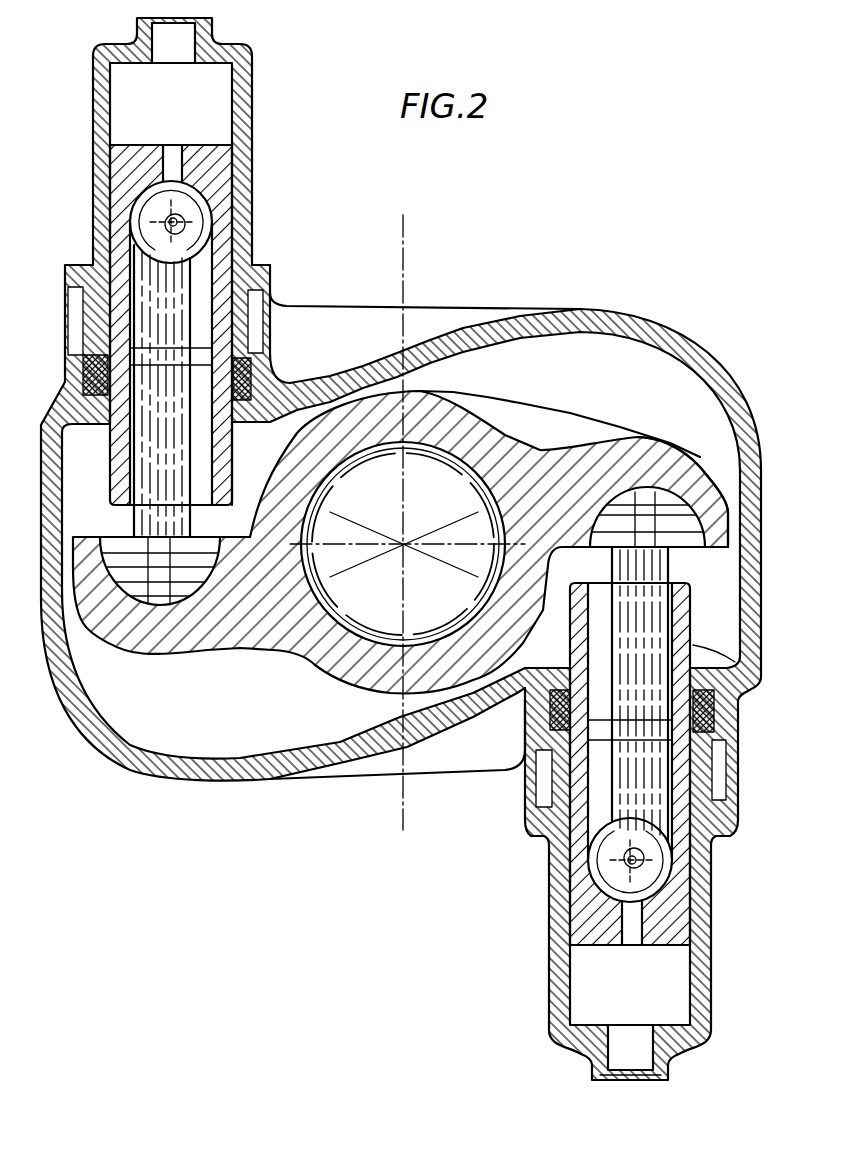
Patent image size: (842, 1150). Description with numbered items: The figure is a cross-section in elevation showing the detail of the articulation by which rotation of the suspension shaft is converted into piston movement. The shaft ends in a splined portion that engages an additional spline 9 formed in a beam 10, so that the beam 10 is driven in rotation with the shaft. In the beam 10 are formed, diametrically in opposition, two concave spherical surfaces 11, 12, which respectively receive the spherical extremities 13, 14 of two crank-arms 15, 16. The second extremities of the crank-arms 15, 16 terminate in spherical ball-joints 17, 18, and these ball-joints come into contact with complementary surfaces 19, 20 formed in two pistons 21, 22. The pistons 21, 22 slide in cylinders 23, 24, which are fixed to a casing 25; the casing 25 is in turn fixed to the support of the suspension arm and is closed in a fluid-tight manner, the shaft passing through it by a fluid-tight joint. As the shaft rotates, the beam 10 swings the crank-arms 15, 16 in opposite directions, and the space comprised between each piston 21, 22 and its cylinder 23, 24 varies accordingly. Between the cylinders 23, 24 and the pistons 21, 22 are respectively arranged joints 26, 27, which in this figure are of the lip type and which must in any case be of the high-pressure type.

The spline 9 is at (395, 643).
The beam 10 is at (547, 480).
The concave spherical surface 11 is at (108, 632).
The concave spherical surface 12 is at (707, 473).
The spherical extremity 13 is at (125, 595).
The spherical extremity 14 is at (673, 527).
The crank-arm 15 is at (197, 315).
The crank-arm 16 is at (742, 680).
The spherical ball-joint 17 is at (197, 222).
The spherical ball-joint 18 is at (658, 880).
The complementary surface 19 is at (128, 212).
The complementary surface 20 is at (598, 877).
The piston 21 is at (215, 160).
The piston 22 is at (580, 930).
The cylinder 23 is at (246, 68).
The cylinder 24 is at (560, 1012).
The casing 25 is at (288, 772).
The joint 26 is at (83, 373).
The joint 27 is at (714, 718).